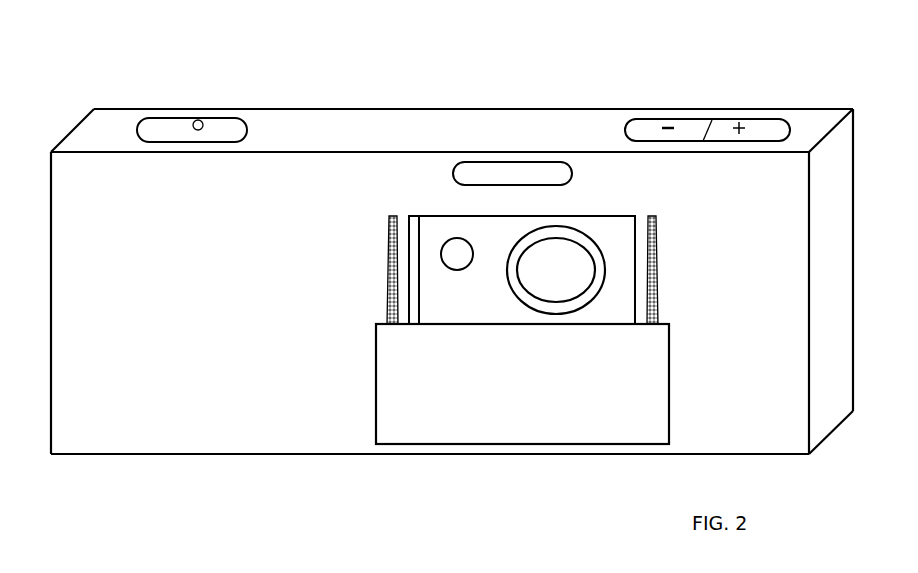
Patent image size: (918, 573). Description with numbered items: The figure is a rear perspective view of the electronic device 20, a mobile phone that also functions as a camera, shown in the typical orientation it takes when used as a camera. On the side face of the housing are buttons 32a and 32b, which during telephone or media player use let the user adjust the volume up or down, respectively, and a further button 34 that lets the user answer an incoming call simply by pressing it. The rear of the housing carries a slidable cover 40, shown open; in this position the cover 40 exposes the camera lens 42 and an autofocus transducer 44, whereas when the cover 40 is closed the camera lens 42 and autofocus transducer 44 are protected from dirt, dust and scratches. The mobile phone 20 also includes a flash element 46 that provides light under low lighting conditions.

The electronic device 20 is at (142, 60).
The button 34 is at (221, 125).
The button 32a is at (763, 128).
The button 32b is at (643, 123).
The flash element 46 is at (506, 162).
The autofocus transducer 44 is at (442, 251).
The camera lens 42 is at (604, 263).
The slidable cover 40 is at (394, 387).